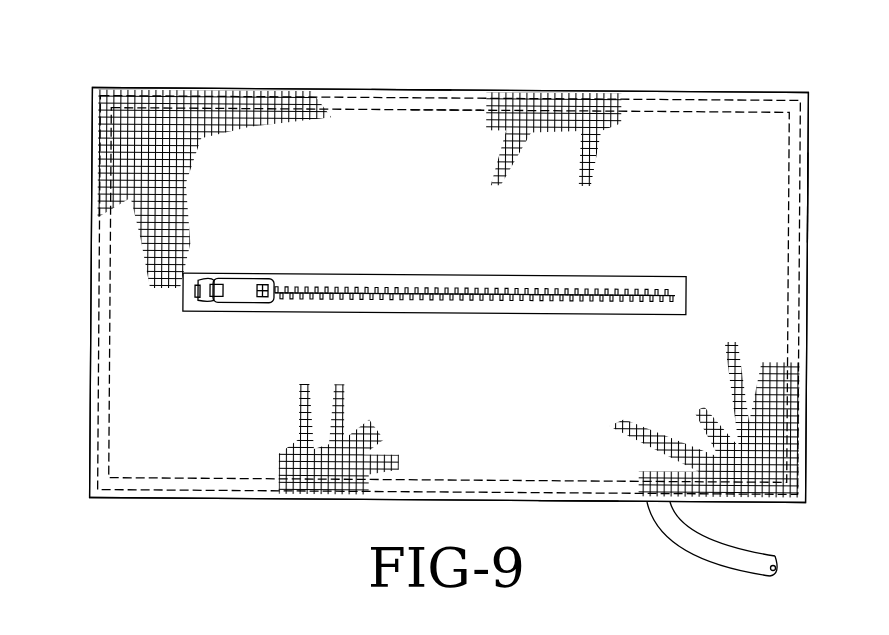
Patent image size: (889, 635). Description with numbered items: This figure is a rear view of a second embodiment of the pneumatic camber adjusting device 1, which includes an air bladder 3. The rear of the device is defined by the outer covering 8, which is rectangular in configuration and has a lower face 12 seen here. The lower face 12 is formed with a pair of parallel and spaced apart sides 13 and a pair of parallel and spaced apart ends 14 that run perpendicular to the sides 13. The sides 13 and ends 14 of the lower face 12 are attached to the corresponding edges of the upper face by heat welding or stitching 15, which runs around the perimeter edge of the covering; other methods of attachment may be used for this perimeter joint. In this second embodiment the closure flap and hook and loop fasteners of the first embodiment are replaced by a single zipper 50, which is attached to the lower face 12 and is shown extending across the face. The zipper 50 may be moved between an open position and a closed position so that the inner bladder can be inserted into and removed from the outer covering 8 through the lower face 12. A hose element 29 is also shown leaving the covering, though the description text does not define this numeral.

The bag assembly 1 is at (186, 64).
The bag body 3 is at (696, 84).
The panel 8 is at (452, 115).
The inner panel 12 is at (352, 148).
The mesh panel 13 is at (91, 156).
The seam 14 is at (409, 90).
The side edge 15 is at (797, 192).
The drain tube 29 is at (710, 556).
The zipper 50 is at (578, 268).